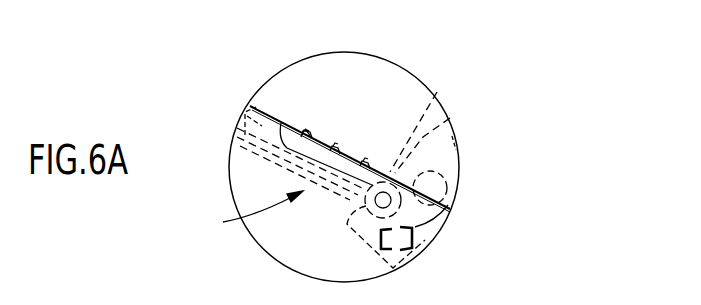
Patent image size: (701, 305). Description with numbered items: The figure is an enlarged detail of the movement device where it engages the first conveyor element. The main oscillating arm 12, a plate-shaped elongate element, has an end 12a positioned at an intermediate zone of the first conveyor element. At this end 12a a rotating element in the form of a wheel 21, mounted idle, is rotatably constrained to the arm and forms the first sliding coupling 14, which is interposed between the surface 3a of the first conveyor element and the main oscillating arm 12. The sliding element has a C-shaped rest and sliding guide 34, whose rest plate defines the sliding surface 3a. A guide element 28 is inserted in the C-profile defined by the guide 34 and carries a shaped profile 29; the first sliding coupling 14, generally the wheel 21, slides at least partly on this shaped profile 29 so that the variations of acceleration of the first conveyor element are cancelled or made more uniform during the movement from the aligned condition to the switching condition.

The surface of the first conveyor element 3a is at (420, 211).
The main oscillating arm 12 is at (441, 82).
The end of the main oscillating arm 12a is at (420, 231).
The first sliding coupling 14 is at (251, 214).
The wheel 21 is at (346, 230).
The guide element 28 is at (318, 157).
The shaped profile 29 is at (262, 149).
The rest and sliding guide 34 is at (263, 107).